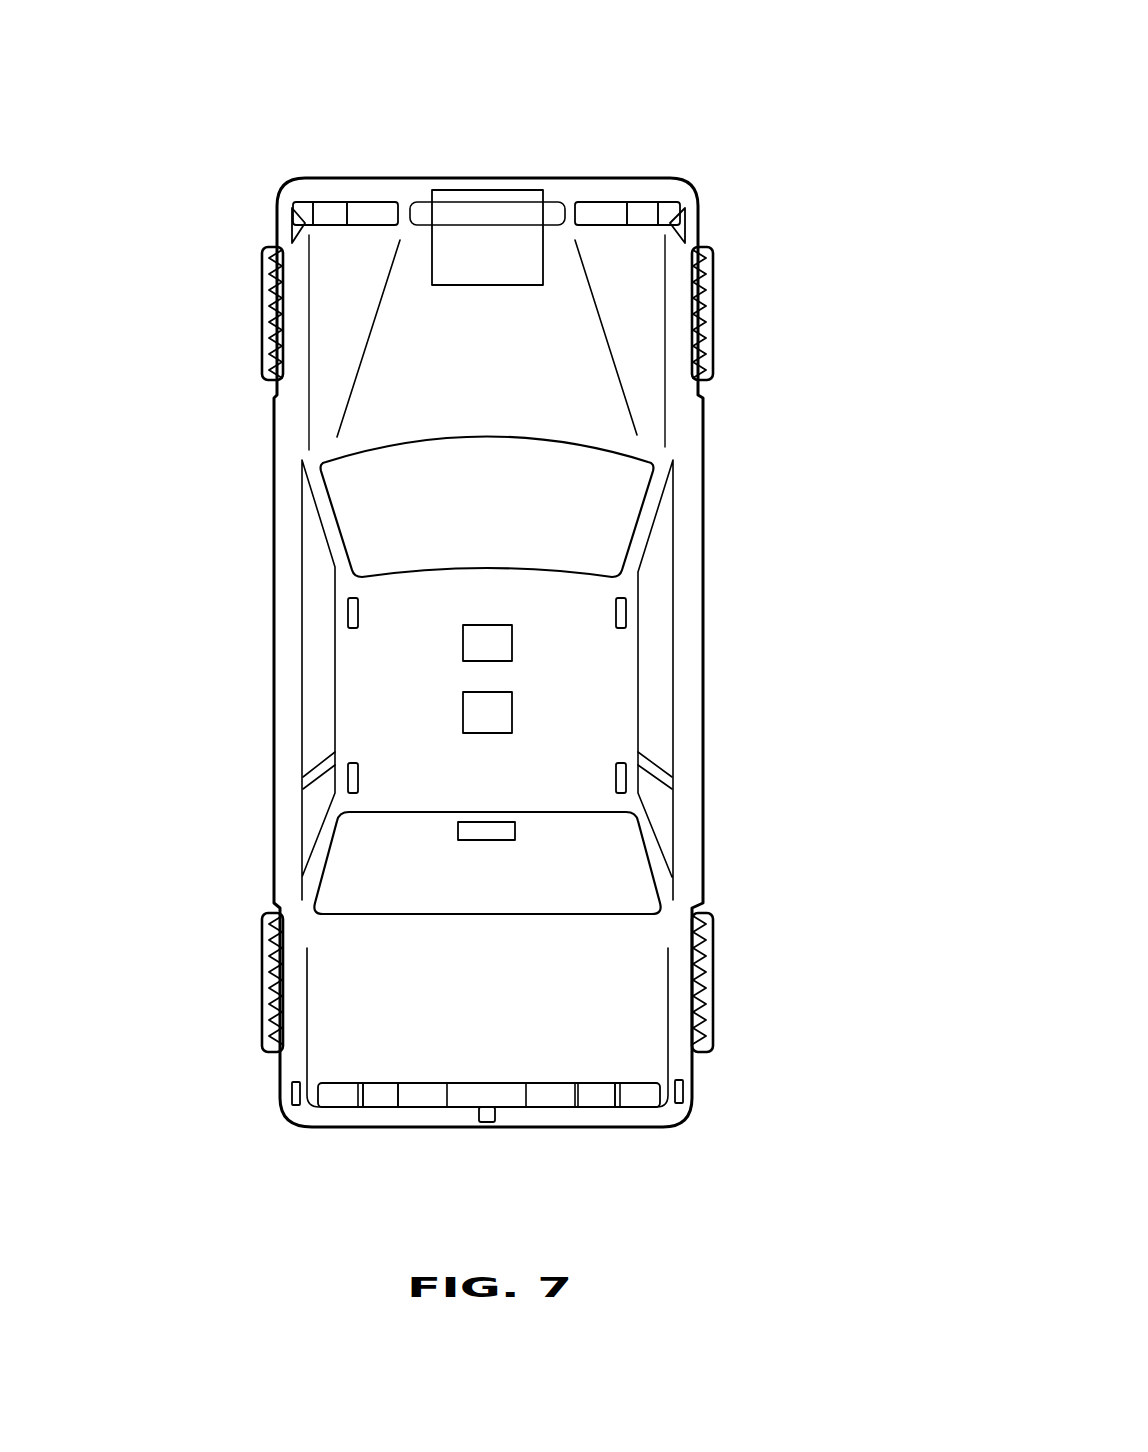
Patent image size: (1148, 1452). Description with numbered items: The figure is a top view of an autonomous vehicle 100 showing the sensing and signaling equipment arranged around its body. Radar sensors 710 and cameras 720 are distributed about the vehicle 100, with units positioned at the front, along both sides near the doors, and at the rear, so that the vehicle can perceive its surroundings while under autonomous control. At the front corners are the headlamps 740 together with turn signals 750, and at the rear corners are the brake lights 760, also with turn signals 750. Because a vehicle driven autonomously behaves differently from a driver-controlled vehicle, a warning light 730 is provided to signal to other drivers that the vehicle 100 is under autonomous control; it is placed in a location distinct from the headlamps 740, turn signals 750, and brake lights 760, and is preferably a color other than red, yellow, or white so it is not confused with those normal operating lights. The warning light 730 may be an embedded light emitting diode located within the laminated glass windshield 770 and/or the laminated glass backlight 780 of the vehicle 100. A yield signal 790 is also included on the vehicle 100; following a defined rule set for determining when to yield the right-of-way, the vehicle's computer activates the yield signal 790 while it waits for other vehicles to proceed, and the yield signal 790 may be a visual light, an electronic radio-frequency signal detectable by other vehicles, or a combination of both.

The vehicle 100 is at (757, 81).
The radar sensors 710 is at (443, 264).
The cameras 720 is at (293, 222).
The warning light 730 is at (505, 720).
The headlamps 740 is at (383, 205).
The turn signals 750 is at (330, 205).
The brake lights 760 is at (513, 829).
The laminated glass windshield 770 is at (487, 507).
The laminated glass backlight 780 is at (487, 863).
The yield signal 790 is at (505, 650).